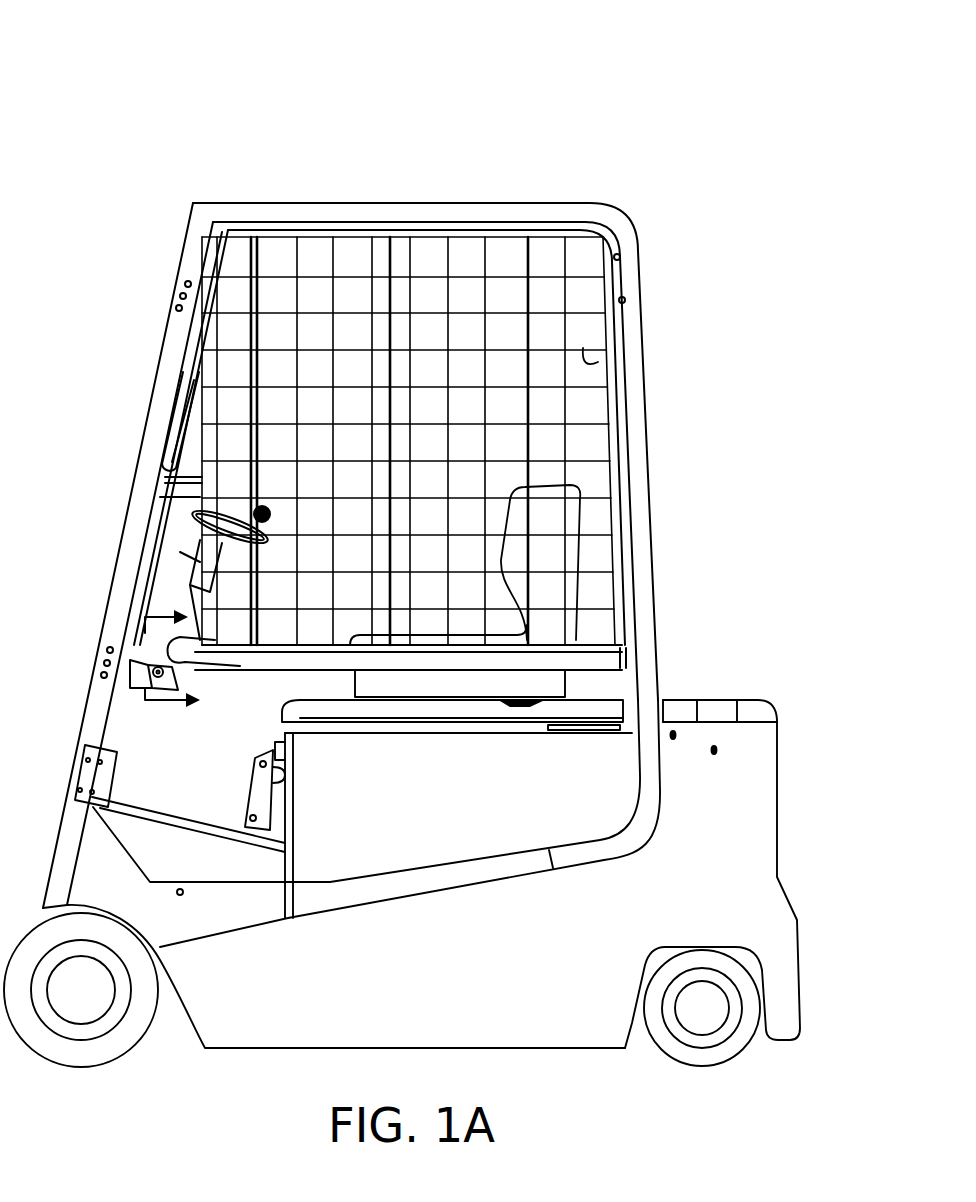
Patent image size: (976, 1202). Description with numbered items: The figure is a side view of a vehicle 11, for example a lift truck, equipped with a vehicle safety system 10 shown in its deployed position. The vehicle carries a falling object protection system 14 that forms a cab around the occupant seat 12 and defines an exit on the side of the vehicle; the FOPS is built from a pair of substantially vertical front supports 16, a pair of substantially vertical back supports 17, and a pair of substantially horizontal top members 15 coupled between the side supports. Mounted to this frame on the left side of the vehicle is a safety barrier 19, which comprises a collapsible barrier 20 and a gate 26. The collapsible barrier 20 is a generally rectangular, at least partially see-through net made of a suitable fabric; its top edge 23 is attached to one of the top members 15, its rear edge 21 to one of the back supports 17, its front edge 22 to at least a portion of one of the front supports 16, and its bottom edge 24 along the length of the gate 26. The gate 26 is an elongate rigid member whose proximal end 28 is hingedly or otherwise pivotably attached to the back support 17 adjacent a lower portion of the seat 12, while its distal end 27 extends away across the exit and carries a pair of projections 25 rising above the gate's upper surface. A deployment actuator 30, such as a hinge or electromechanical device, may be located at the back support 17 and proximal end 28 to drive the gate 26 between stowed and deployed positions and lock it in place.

The vehicle safety system 10 is at (148, 102).
The vehicle 11 is at (780, 672).
The occupant seat 12 is at (458, 685).
The falling object protection system (FOPS) 14 is at (470, 170).
The top member 15 is at (372, 218).
The front support 16 is at (145, 460).
The back support 17 is at (636, 396).
The safety barrier 19 is at (172, 498).
The collapsible barrier 20 is at (598, 362).
The rear edge 21 is at (628, 518).
The front edge 22 is at (190, 337).
The top edge 23 is at (312, 218).
The bottom edge 24 is at (280, 645).
The projections 25 is at (168, 655).
The gate 26 is at (322, 660).
The distal end 27 is at (193, 664).
The proximal end 28 is at (617, 663).
The deployment actuator 30 is at (634, 660).